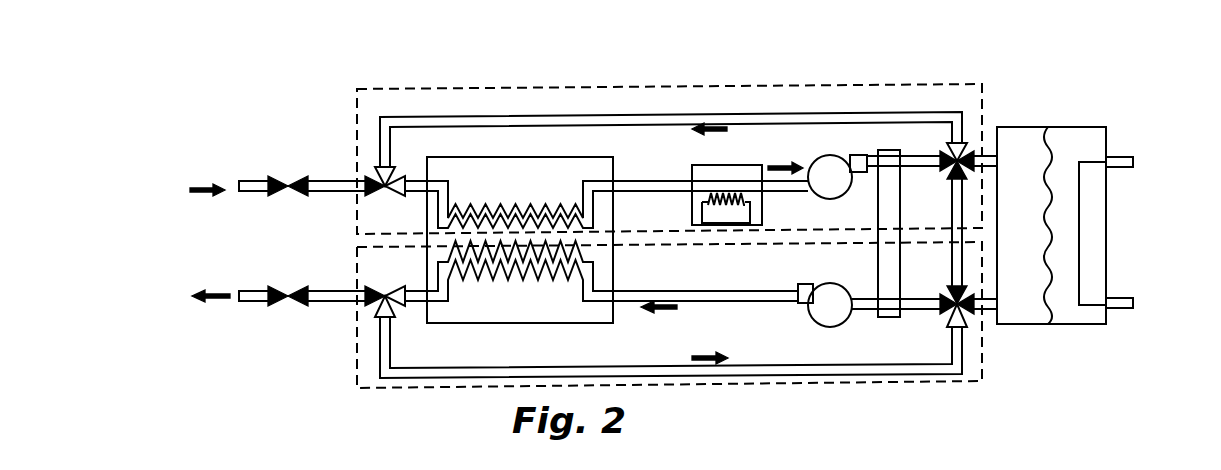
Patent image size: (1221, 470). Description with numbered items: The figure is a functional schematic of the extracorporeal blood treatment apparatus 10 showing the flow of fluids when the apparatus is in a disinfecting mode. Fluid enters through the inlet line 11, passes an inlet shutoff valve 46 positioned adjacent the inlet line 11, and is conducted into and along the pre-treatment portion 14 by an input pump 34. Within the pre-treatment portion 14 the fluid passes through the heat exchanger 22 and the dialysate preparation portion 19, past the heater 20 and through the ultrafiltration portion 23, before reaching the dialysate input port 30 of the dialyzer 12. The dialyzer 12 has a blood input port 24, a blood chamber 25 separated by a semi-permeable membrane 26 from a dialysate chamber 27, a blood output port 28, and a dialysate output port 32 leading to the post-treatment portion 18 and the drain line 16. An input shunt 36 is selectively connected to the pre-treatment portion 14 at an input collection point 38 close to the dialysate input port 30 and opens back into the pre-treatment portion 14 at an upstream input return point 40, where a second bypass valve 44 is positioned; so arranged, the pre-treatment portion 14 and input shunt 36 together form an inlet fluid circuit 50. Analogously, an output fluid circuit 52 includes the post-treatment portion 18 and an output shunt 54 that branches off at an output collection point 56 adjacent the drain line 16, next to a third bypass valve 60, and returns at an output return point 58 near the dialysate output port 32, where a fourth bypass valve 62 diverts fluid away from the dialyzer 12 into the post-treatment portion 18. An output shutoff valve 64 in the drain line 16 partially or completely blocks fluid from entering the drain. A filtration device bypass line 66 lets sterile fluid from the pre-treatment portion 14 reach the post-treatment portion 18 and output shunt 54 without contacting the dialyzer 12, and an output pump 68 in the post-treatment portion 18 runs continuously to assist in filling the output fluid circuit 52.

The apparatus 10 is at (990, 33).
The inlet line 11 is at (242, 183).
The dialyzer 12 is at (1073, 127).
The pre-treatment portion 14 is at (630, 180).
The drain line 16 is at (257, 302).
The post-treatment portion 18 is at (703, 289).
The dialysate preparation portion 19 is at (763, 193).
The heater 20 is at (692, 193).
The heat exchanger 22 is at (515, 323).
The ultrafiltration portion 23 is at (890, 257).
The blood input port 24 is at (1110, 300).
The blood chamber 25 is at (1060, 250).
The semi-permeable membrane 26 is at (1063, 313).
The dialysate chamber 27 is at (1027, 303).
The blood output port 28 is at (1110, 167).
The dialysate input port 30 is at (993, 153).
The dialysate output port 32 is at (988, 310).
The input pump 34 is at (833, 155).
The input shunt 36 is at (668, 113).
The input collection point 38 is at (942, 153).
The input return point 40 is at (385, 178).
The second bypass valve 44 is at (378, 182).
The inlet shutoff valve 46 is at (268, 181).
The inlet fluid circuit 50 is at (837, 80).
The output fluid circuit 52 is at (790, 384).
The output shunt 54 is at (660, 372).
The output collection point 56 is at (392, 320).
The output return point 58 is at (942, 313).
The third bypass valve 60 is at (367, 303).
The fourth bypass valve 62 is at (960, 318).
The output shutoff valve 64 is at (279, 303).
The filtration device bypass line 66 is at (951, 243).
The output pump 68 is at (815, 320).